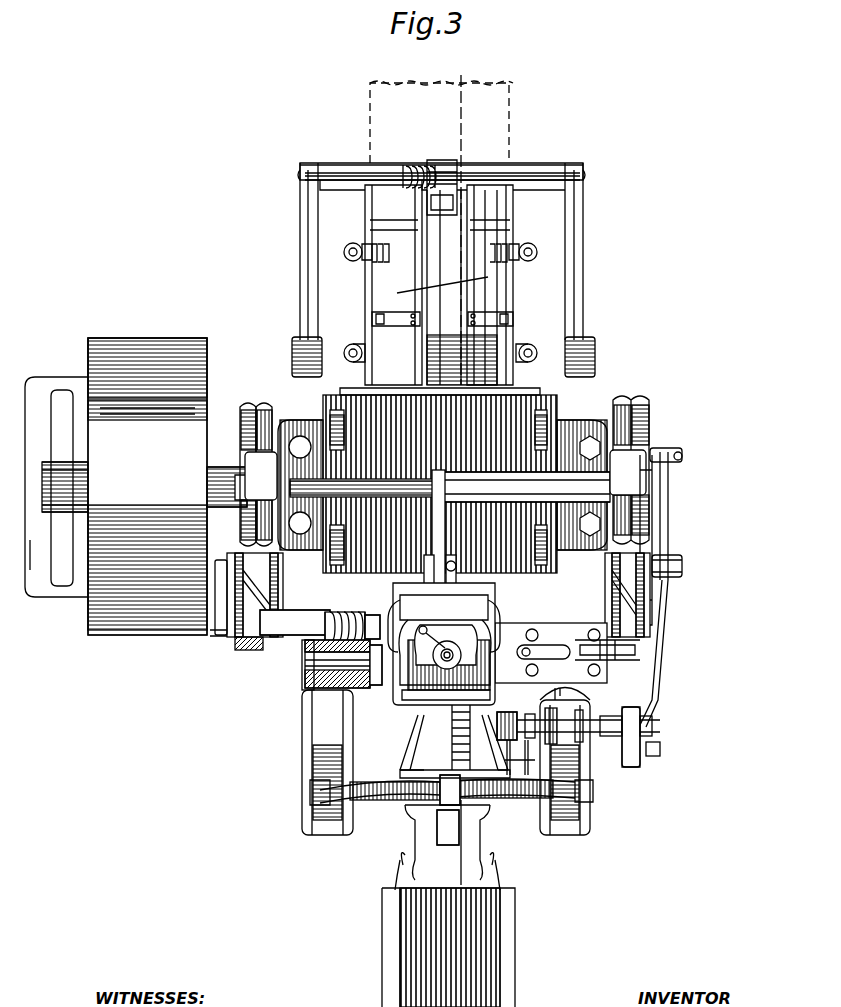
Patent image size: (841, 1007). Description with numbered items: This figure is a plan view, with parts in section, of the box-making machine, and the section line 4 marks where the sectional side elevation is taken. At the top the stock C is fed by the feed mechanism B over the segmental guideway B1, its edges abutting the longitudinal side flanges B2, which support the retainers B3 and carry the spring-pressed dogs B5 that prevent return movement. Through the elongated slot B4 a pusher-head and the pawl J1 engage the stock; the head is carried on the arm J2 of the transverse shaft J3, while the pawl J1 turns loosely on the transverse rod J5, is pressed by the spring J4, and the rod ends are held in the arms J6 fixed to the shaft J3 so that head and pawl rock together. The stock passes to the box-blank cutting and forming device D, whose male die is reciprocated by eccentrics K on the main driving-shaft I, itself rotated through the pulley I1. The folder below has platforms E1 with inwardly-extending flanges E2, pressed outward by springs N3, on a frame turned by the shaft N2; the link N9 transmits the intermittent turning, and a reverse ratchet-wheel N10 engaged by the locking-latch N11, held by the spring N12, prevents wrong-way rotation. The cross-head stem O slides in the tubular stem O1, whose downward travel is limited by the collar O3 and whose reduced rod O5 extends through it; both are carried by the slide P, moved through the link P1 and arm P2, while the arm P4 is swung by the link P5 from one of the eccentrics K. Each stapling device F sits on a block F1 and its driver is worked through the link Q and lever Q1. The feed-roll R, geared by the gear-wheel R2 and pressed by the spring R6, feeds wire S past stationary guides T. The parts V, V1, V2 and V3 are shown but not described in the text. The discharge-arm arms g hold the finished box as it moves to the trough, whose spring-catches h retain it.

The section line 4 is at (459, 471).
The stock C is at (502, 137).
The arms J6 is at (300, 240).
The transverse rod J5 is at (545, 175).
The spring J4 is at (425, 168).
The pawl J1 is at (450, 203).
The arm J2 is at (387, 295).
The transverse shaft J3 is at (595, 358).
The feed mechanism B is at (423, 285).
The segmental guideway B1 is at (440, 251).
The longitudinal side flanges B2 is at (373, 318).
The retainers B3 is at (410, 346).
The elongated slot B4 is at (450, 280).
The spring-pressed dogs B5 is at (345, 262).
The box-blank cutting and forming device D is at (442, 480).
The arm P2 is at (440, 556).
The slide P is at (470, 600).
The link P1 is at (445, 617).
The arm P4 is at (648, 542).
The link P5 is at (668, 500).
The pulley I1 is at (165, 340).
The main driving-shaft I is at (225, 470).
The eccentrics K is at (248, 412).
The collar O3 is at (240, 560).
The stem O is at (444, 644).
The tubular stem O1 is at (448, 648).
The reduced rod O5 is at (462, 641).
The lever Q1 is at (243, 650).
The link Q is at (640, 660).
The stapling device F is at (434, 641).
The block F1 is at (525, 630).
The spring N12 is at (352, 598).
The locking-latch N11 is at (375, 612).
The shaft N2 is at (305, 675).
The reverse ratchet-wheel N10 is at (385, 693).
The link N9 is at (373, 715).
The springs N3 is at (445, 725).
The inwardly-extending flanges E2 is at (405, 745).
The platforms E1 is at (418, 772).
The feed-roll R is at (497, 724).
The gear-wheel R2 is at (538, 706).
The spring R6 is at (565, 705).
The wire S is at (499, 758).
The stationary guides T is at (520, 758).
The lever block V is at (635, 705).
The lever V1 is at (626, 760).
The bolt V2 is at (660, 755).
The rod V3 is at (652, 690).
The arms g is at (440, 832).
The spring-catches h is at (400, 875).